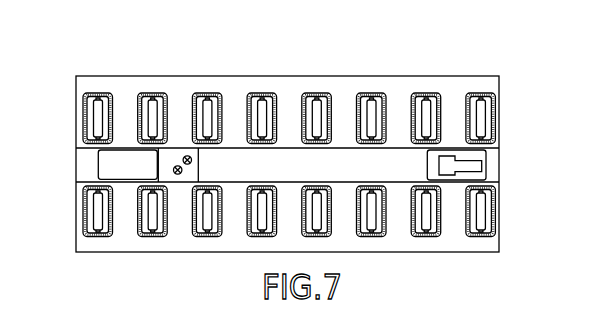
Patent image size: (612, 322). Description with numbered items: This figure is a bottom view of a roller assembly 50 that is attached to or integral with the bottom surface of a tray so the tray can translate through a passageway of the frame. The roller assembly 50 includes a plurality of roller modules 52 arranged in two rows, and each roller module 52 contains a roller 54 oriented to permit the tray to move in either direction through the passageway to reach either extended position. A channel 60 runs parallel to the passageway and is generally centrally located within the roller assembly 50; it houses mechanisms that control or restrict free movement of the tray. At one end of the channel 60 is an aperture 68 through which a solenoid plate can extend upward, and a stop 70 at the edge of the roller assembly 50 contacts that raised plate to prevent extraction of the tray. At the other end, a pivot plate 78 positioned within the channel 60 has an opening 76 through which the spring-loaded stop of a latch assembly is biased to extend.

The roller assembly 50 is at (404, 81).
The roller module 52 is at (217, 92).
The roller 54 is at (202, 98).
The channel 60 is at (343, 167).
The aperture 68 is at (114, 163).
The stop 70 is at (167, 155).
The opening 76 is at (475, 165).
The pivot plate 78 is at (470, 175).